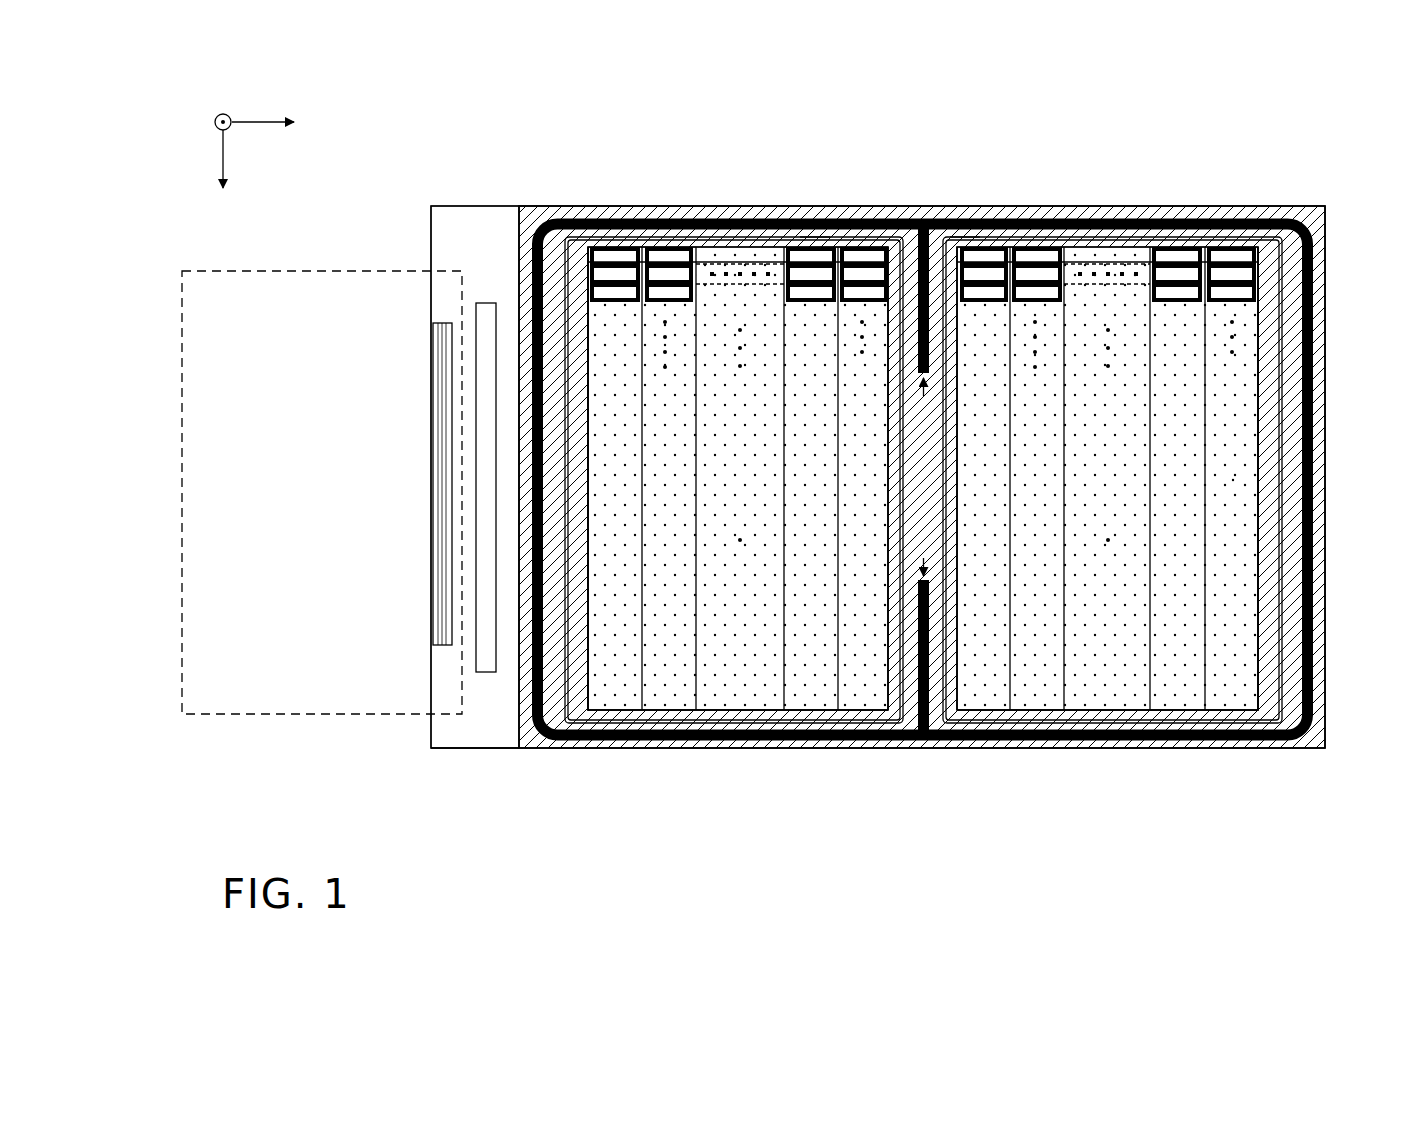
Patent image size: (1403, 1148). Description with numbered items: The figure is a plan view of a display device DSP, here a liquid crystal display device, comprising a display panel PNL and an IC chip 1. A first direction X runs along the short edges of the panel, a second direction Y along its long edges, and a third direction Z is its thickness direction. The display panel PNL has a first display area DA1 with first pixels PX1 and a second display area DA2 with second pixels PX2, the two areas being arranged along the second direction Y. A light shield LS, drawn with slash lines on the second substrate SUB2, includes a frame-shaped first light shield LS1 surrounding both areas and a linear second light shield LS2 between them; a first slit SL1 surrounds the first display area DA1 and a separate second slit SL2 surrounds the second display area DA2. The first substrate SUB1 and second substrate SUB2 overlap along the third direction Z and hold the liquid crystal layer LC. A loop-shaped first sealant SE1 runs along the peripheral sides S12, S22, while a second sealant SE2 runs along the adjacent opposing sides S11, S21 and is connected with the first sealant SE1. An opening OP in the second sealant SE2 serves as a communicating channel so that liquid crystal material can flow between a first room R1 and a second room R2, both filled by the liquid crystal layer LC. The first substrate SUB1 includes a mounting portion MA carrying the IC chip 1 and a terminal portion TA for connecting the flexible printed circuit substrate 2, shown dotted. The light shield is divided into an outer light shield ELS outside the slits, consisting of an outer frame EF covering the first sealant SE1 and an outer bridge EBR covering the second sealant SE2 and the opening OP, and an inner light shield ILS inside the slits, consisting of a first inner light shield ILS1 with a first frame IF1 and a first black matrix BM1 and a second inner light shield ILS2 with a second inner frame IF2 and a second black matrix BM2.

The display device DSP is at (1300, 152).
The display panel PNL is at (1325, 748).
The first substrate SUB1 is at (478, 216).
The second substrate SUB2 is at (546, 216).
The first pixels PX1 is at (666, 250).
The second pixels PX2 is at (1036, 250).
The first display area DA1 is at (738, 250).
The second display area DA2 is at (1108, 250).
The first slit SL1 is at (815, 236).
The second slit SL2 is at (966, 236).
The opposing side S11 is at (888, 514).
The peripheral side S12 is at (724, 262).
The opposing side S21 is at (957, 522).
The peripheral side S22 is at (1146, 262).
The first sealant SE1 is at (858, 742).
The second sealant SE2 is at (930, 346).
The first black matrix BM1 is at (840, 374).
The second black matrix BM2 is at (1205, 374).
The opening OP is at (930, 454).
The first room R1 is at (752, 491).
The second room R2 is at (1120, 491).
The liquid crystal layer LC is at (1233, 480).
The first frame IF1 is at (590, 600).
The second inner frame IF2 is at (1258, 610).
The flexible printed circuit substrate 2 is at (283, 714).
The terminal portion TA is at (440, 645).
The IC chip 1 is at (486, 672).
The mounting portion MA is at (499, 748).
The outer light shield ELS is at (610, 750).
The light shield LS is at (668, 750).
The first light shield LS1 is at (772, 726).
The second light shield LS2 is at (952, 670).
The outer bridge EBR is at (933, 618).
The outer frame EF is at (1222, 750).
The first inner light shield ILS1 is at (832, 745).
The second inner light shield ILS2 is at (1108, 561).
The inner light shield ILS is at (923, 581).
The first direction X is at (222, 175).
The second direction Y is at (273, 122).
The third direction Z is at (214, 114).